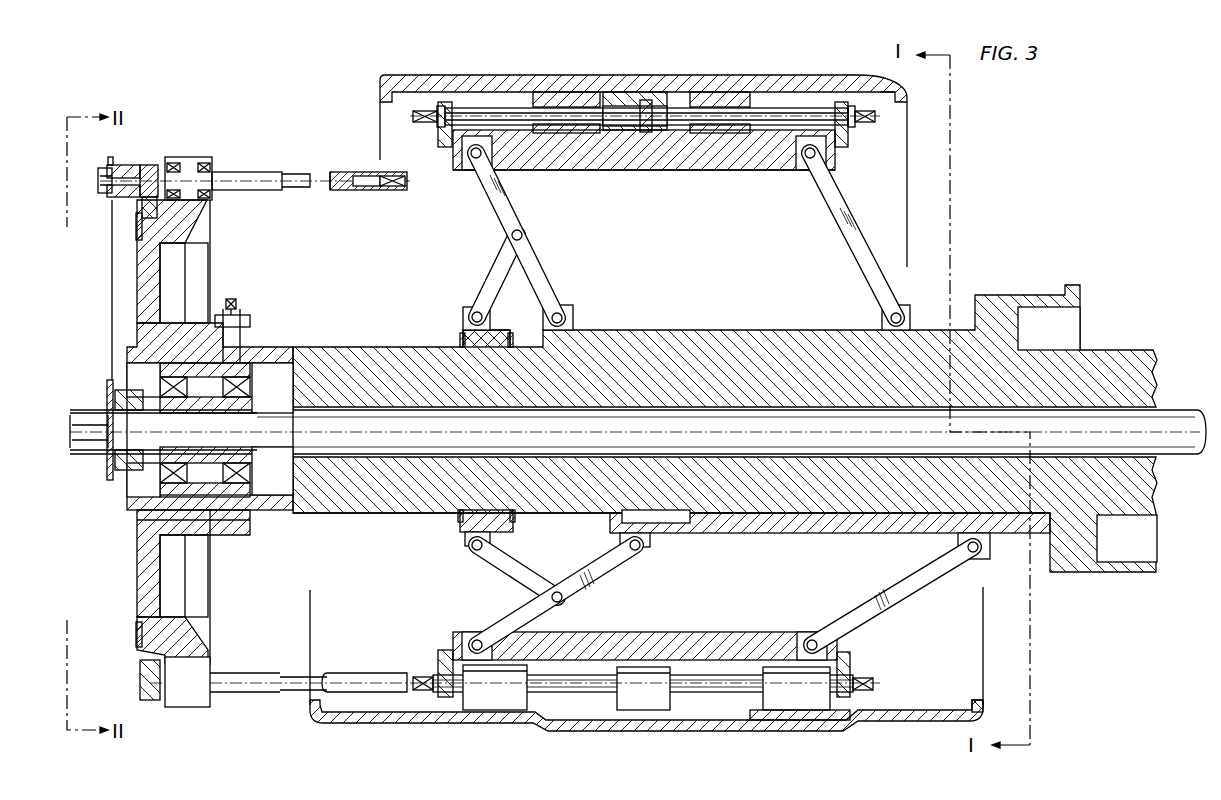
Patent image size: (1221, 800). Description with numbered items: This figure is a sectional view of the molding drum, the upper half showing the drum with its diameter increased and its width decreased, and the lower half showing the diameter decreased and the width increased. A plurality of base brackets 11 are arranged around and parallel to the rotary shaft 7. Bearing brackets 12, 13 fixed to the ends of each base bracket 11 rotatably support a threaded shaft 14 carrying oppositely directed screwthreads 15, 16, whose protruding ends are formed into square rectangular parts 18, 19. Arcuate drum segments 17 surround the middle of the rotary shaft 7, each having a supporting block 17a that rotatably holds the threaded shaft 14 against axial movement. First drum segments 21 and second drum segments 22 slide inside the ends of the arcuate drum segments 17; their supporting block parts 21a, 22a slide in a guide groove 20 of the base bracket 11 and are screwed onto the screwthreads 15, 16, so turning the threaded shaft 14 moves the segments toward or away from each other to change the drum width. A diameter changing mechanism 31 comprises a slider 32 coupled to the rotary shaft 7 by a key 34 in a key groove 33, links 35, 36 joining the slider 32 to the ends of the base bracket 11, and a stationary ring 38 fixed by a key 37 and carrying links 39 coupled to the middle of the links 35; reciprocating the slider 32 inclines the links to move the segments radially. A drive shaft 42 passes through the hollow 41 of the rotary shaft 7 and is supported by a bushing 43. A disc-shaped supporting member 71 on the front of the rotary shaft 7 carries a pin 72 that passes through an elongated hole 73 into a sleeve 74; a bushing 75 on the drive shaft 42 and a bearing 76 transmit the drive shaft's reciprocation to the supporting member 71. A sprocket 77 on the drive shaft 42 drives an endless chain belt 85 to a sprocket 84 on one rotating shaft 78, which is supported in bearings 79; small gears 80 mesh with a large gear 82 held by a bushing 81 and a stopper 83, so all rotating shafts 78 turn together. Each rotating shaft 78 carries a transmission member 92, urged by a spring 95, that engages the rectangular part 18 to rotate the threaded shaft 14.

The rotary shaft 7 is at (1105, 352).
The base bracket 11 is at (655, 166).
The bearing bracket 12 is at (443, 140).
The bearing bracket 13 is at (848, 138).
The threaded shaft 14 is at (522, 124).
The screwthread 15 is at (500, 100).
The screwthread 16 is at (810, 105).
The arcuate drum segment 17 is at (698, 78).
The supporting block 17a is at (648, 78).
The rectangular part 18 is at (417, 119).
The rectangular part 19 is at (872, 114).
The guide groove 20 is at (777, 132).
The first drum segment 21 is at (425, 78).
The supporting block part 21a is at (563, 130).
The second drum segment 22 is at (786, 80).
The supporting block part 22a is at (703, 130).
The diameter changing mechanism 31 is at (679, 235).
The slider 32 is at (699, 330).
The key groove 33 is at (583, 511).
The key 34 is at (661, 512).
The link 35 is at (552, 290).
The link 36 is at (850, 260).
The key 37 is at (486, 510).
The stationary ring 38 is at (462, 338).
The link 39 is at (487, 285).
The hollow 41 is at (638, 432).
The drive shaft 42 is at (437, 458).
The bushing 43 is at (292, 468).
The supporting member 71 is at (158, 294).
The pin 72 is at (240, 322).
The elongated hole 73 is at (275, 356).
The sleeve 74 is at (208, 388).
The bushing 75 is at (262, 452).
The bearing 76 is at (256, 393).
The sprocket 77 is at (108, 398).
The rotating shaft 78 is at (262, 172).
The bearing 79 is at (212, 170).
The small gear 80 is at (150, 165).
The bushing 81 is at (157, 214).
The large gear 82 is at (141, 207).
The stopper 83 is at (136, 232).
The sprocket 84 is at (125, 165).
The endless chain belt 85 is at (112, 302).
The transmission member 92 is at (375, 191).
The spring 95 is at (340, 172).